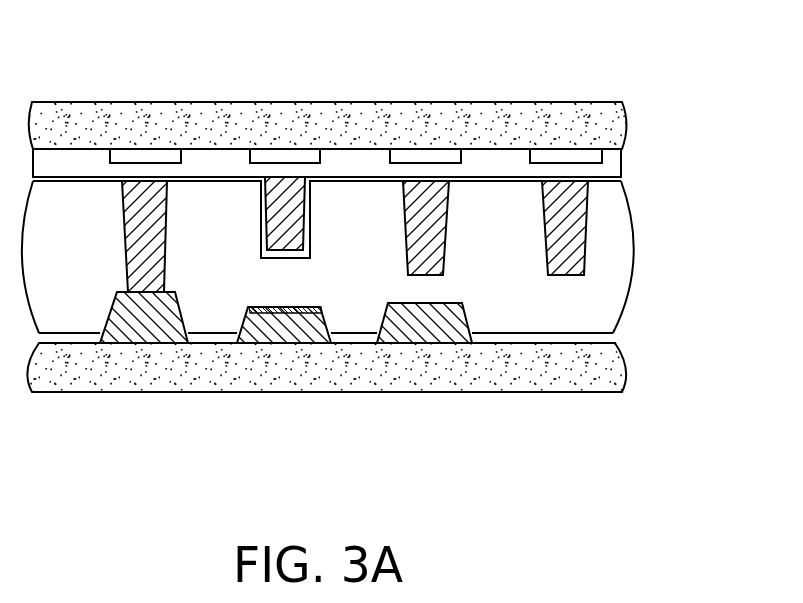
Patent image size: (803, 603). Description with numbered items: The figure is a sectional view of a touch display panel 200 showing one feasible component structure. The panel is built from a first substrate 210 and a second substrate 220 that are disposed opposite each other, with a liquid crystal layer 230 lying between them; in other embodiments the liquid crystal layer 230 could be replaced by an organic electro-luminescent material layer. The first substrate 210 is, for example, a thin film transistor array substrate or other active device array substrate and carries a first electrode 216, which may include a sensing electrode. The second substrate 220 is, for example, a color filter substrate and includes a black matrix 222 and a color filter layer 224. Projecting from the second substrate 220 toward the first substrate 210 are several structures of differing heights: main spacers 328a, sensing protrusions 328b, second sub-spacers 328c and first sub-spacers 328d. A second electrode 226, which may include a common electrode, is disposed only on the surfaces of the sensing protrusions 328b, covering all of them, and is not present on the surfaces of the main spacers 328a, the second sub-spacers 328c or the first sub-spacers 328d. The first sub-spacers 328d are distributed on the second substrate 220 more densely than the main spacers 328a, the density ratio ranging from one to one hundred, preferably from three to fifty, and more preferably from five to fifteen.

The touch display panel 200 is at (720, 500).
The first substrate 210 is at (590, 367).
The first electrode 216 is at (248, 310).
The second substrate 220 is at (598, 130).
The black matrix 222 is at (580, 155).
The color filter layer 224 is at (603, 167).
The second electrode 226 is at (308, 237).
The liquid crystal layer 230 is at (598, 301).
The main spacer 328a is at (135, 215).
The sensing protrusion 328b is at (280, 212).
The second sub-spacer 328c is at (565, 210).
The first sub-spacer 328d is at (422, 215).